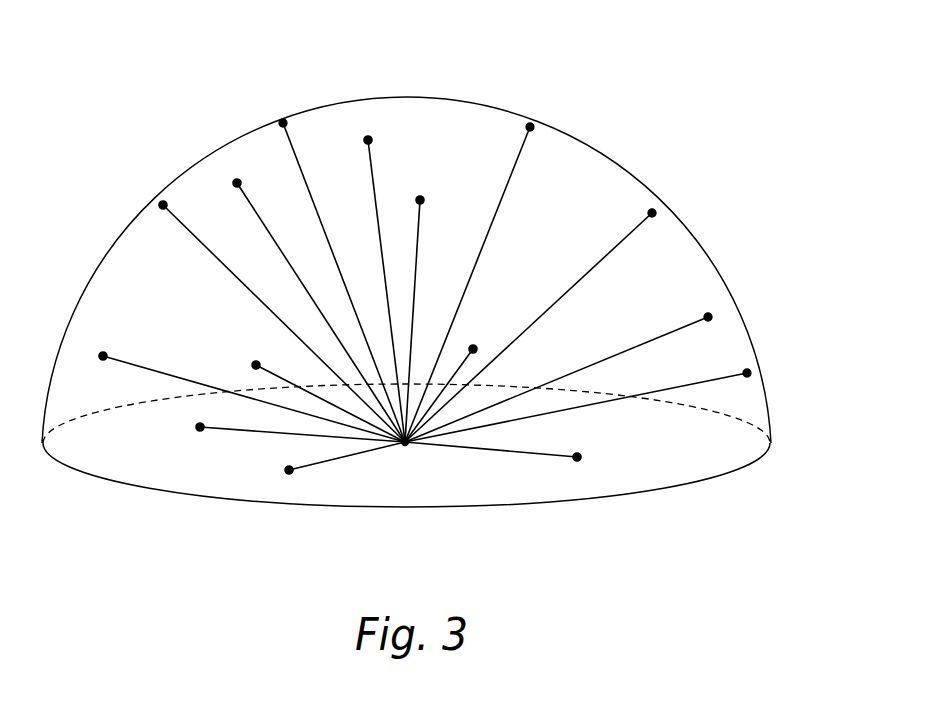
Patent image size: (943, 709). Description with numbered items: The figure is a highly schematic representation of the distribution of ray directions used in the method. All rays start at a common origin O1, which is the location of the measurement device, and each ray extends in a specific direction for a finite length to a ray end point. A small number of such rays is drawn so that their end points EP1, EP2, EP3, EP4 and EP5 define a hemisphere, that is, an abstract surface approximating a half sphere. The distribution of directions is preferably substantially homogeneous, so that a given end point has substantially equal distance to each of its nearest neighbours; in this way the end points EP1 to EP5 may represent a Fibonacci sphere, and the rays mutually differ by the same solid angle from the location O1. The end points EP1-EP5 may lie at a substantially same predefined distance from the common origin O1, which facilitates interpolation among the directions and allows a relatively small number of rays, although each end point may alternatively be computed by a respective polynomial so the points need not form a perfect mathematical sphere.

The end point EP1 is at (747, 369).
The end point EP2 is at (708, 313).
The end point EP3 is at (653, 209).
The end point EP4 is at (531, 123).
The end point EP5 is at (283, 119).
The location of the measurement device O1 is at (413, 446).